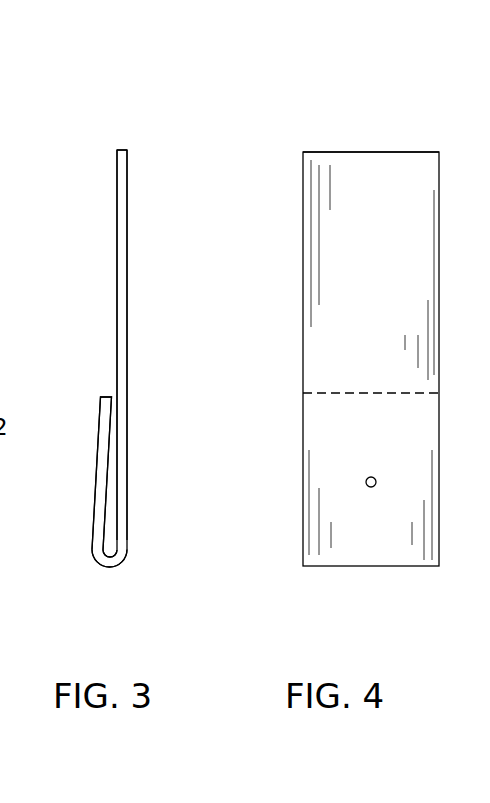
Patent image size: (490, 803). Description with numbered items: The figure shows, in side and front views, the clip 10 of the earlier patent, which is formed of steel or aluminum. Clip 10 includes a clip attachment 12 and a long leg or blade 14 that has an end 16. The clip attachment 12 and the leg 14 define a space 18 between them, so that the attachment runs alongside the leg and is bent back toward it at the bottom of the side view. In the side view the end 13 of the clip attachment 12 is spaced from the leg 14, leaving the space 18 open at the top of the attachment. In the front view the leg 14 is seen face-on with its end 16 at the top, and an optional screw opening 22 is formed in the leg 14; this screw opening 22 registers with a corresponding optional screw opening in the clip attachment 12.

In FIG. 3, the clip 10 is at (155, 158).
In FIG. 4, the clip 10 is at (440, 130).
In FIG. 3, the clip attachment 12 is at (82, 455).
In FIG. 4, the clip attachment 12 is at (283, 490).
In FIG. 4, the end of clip attachment 13 is at (383, 393).
In FIG. 3, the long leg or blade 14 is at (135, 252).
In FIG. 4, the long leg or blade 14 is at (295, 240).
In FIG. 3, the end 16 is at (121, 150).
In FIG. 4, the end 16 is at (360, 152).
In FIG. 3, the space 18 is at (111, 515).
In FIG. 4, the screw opening 22 is at (376, 487).